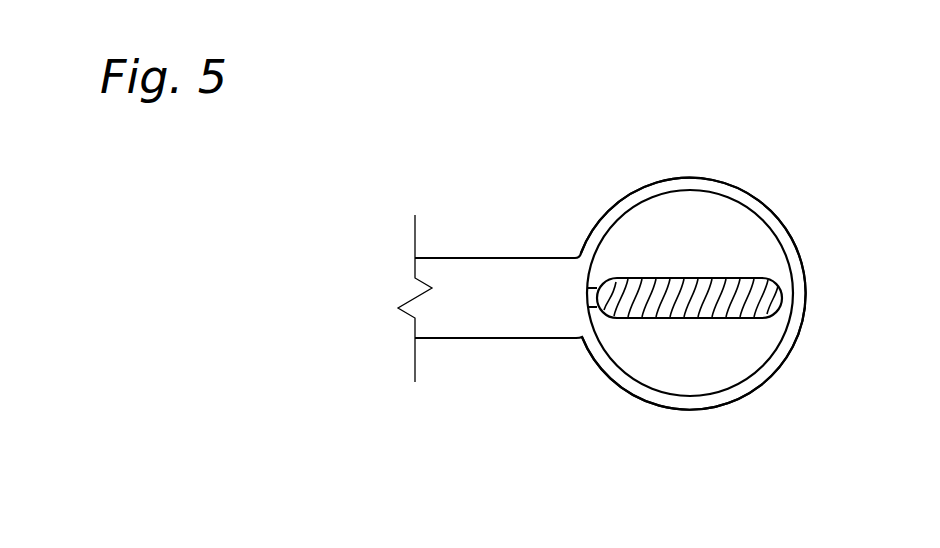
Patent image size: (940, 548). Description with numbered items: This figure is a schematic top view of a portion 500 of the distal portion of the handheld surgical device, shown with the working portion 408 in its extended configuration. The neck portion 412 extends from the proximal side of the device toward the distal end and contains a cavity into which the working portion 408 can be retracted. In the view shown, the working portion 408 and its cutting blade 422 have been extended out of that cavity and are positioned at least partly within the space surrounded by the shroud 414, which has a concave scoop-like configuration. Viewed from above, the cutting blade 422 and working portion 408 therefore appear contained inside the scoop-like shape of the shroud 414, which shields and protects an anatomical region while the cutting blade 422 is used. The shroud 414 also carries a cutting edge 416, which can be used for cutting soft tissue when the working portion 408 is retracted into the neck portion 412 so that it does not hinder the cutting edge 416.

The portion of the distal portion 500 is at (745, 130).
The neck portion 412 is at (543, 258).
The cutting edge 416 is at (806, 290).
The shroud 414 is at (728, 408).
The working portion 408 is at (723, 278).
The cutting blade 422 is at (682, 278).